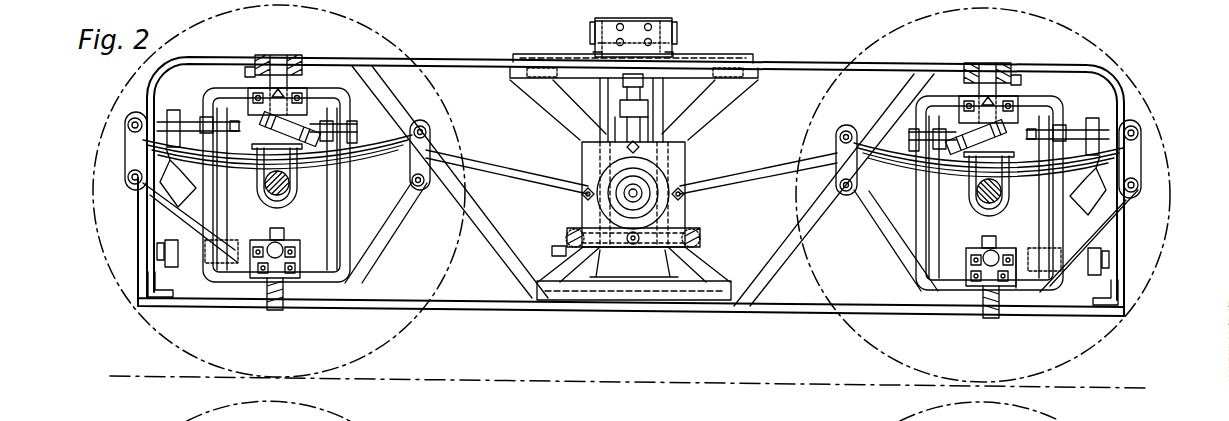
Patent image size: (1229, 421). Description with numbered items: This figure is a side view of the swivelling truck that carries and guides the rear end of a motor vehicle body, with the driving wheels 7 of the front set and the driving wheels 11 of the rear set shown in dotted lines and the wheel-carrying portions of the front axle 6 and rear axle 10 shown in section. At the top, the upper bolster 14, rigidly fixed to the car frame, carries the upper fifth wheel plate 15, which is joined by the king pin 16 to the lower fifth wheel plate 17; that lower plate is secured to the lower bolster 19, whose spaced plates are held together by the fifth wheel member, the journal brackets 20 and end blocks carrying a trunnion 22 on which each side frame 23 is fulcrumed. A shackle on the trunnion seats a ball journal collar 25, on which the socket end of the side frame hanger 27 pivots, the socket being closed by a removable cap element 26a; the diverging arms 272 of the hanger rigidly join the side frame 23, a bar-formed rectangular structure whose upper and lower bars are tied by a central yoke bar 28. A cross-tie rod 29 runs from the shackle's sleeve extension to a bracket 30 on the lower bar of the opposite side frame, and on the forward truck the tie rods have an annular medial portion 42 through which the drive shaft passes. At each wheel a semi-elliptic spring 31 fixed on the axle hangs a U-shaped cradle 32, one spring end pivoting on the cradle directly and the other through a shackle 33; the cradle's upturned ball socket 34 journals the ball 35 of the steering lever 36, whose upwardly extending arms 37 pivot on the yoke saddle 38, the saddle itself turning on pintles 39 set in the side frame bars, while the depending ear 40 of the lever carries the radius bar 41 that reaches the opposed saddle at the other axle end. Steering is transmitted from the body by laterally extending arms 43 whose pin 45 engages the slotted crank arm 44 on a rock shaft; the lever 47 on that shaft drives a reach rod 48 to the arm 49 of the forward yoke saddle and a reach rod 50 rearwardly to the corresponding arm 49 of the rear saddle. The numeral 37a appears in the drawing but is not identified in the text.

The axle 6 is at (983, 215).
The driving wheels 7 is at (1108, 347).
The axle 10 is at (320, 183).
The driving wheels 11 is at (443, 290).
The upper bolster 14 is at (673, 54).
The upper fifth wheel plate 15 is at (747, 60).
The king pin 16 is at (636, 416).
The lower fifth wheel plate 17 is at (576, 76).
The lower bolster 19 is at (663, 124).
The journal brackets 20 is at (600, 130).
The trunnion 22 is at (683, 167).
The side frame 23 is at (804, 62).
The ball journal collar 25 is at (613, 207).
The removable cap element 26a is at (690, 217).
The side frame hanger 27 is at (710, 267).
The diverging arms 272 is at (747, 100).
The central yoke bar 28 is at (792, 222).
The cross-tie rod 29 is at (560, 253).
The bracket 30 is at (665, 272).
The semi-elliptic spring 31 is at (375, 143).
The U-shaped cradle 32 is at (175, 220).
The shackle 33 is at (130, 150).
The ball socket 34 is at (275, 262).
The ball 35 is at (258, 266).
The steering lever 36 is at (362, 220).
The upwardly extending arms 37 is at (226, 188).
The hanger rod 37a is at (1020, 285).
The yoke saddle 38 is at (337, 97).
The pintles 39 is at (282, 60).
The depending ear 40 is at (160, 252).
The radius bar 41 is at (160, 178).
The annular medial portion 42 is at (1128, 213).
The laterally extending arms 43 is at (630, 80).
The crank arm 44 is at (642, 110).
The pin 45 is at (630, 122).
The lever 47 is at (693, 153).
The reach rod 48 is at (778, 168).
The arm 49 is at (253, 100).
The reach rod 50 is at (493, 160).